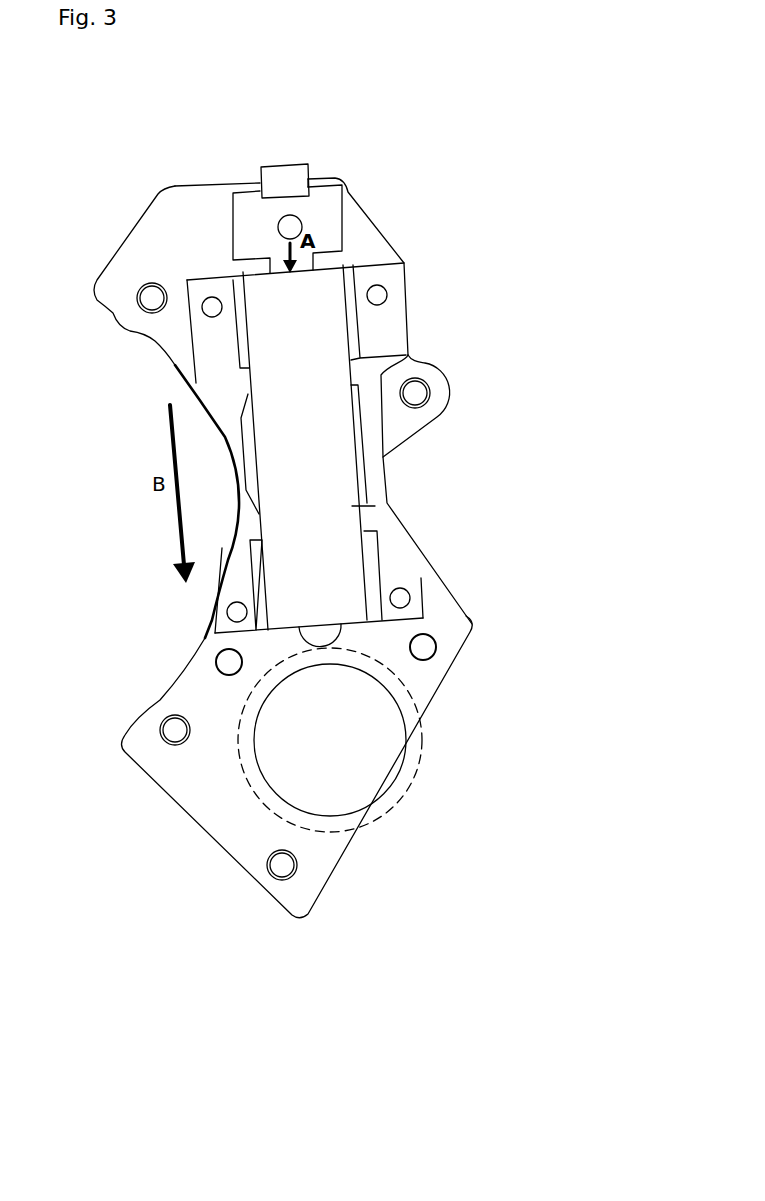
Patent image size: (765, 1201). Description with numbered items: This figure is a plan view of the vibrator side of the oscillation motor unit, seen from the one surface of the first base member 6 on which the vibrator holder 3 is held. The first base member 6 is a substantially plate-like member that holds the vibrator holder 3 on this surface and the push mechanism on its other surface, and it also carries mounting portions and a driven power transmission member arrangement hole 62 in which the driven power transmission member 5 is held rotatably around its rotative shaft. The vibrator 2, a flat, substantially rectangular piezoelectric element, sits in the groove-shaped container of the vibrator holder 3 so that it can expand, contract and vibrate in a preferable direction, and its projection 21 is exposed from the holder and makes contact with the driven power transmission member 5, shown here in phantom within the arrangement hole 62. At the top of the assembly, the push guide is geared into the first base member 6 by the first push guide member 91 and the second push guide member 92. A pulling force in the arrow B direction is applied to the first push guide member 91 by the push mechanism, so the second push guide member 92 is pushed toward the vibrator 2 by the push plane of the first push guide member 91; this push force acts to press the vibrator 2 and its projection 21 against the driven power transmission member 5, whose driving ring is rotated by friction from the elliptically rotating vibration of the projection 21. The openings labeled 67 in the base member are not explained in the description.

The vibrator 2 is at (363, 507).
The vibrator holder 3 is at (382, 528).
The driven power transmission member 5 is at (375, 813).
The first base member 6 is at (318, 863).
The projection 21 is at (341, 645).
The driven power transmission member arrangement hole 62 is at (375, 758).
The mounting hole 67 is at (216, 662).
The first push guide member 91 is at (277, 173).
The second push guide member 92 is at (345, 185).